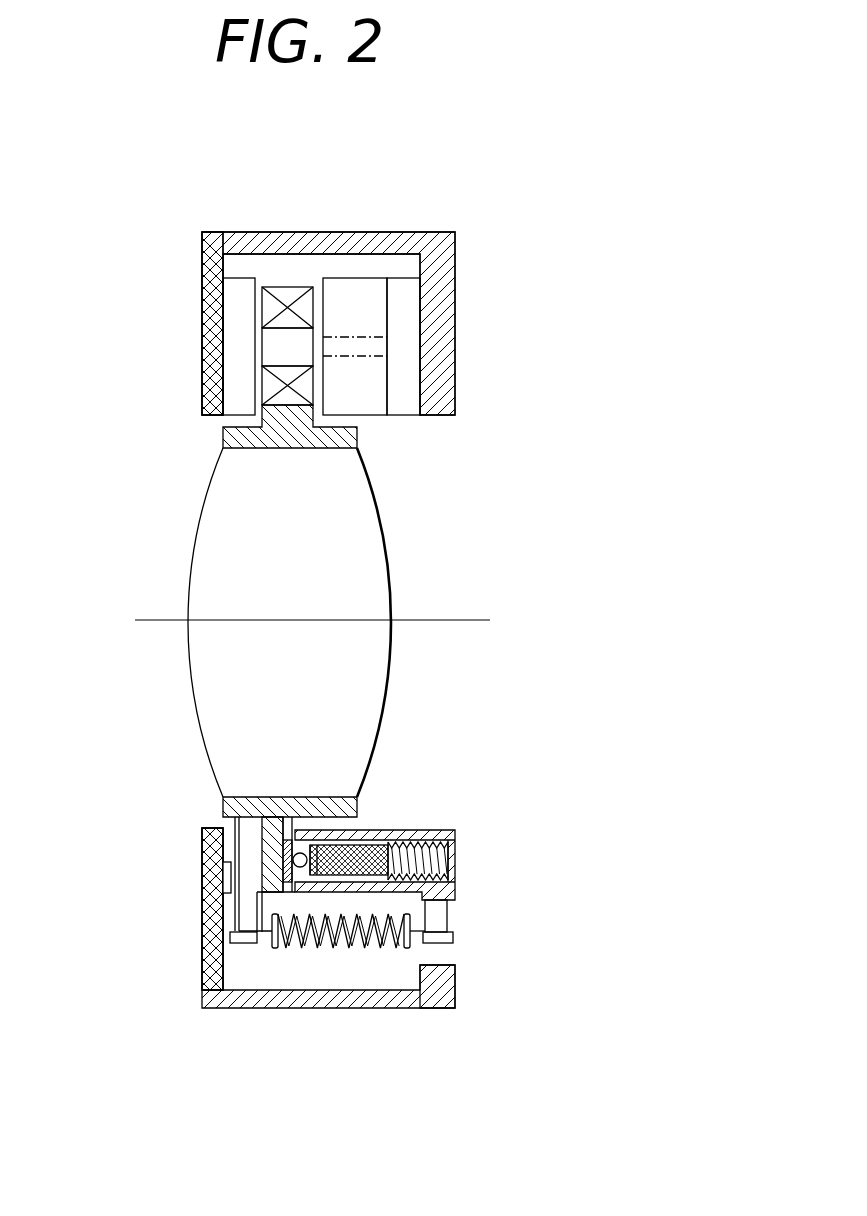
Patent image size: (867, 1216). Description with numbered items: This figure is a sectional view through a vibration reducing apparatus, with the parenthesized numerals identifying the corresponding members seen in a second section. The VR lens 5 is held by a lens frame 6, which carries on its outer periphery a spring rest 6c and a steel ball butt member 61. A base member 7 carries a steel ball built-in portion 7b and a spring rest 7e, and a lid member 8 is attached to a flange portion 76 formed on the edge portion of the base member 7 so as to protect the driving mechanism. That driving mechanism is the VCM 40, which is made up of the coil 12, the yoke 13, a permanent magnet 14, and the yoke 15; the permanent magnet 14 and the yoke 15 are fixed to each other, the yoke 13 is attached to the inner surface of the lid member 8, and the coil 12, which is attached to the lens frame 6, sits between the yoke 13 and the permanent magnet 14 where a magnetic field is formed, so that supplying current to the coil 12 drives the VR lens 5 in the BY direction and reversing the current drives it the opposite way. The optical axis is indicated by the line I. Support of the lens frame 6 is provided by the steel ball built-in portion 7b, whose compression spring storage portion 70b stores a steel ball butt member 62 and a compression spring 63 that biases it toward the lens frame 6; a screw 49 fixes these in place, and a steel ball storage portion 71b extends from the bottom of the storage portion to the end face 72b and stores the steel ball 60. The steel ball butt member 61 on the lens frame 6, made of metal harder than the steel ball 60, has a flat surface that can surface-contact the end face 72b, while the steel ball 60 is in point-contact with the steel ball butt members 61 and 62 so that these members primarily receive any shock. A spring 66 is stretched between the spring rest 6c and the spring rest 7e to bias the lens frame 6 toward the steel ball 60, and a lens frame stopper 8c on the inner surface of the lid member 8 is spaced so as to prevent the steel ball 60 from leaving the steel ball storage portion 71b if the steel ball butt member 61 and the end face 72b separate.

The VR lens 5 is at (197, 688).
The lens frame 6 is at (223, 436).
The base member 7 is at (450, 347).
The lid member 8 is at (207, 358).
The coil 12 is at (290, 287).
The yoke 13 is at (232, 295).
The permanent magnet 14 is at (370, 285).
The yoke 15 is at (412, 312).
The VCM 40 is at (311, 281).
The flange portion 76 is at (232, 232).
The optical axis I is at (157, 620).
The steel ball butt member 61 is at (283, 845).
The end face 72b is at (287, 836).
The steel ball storage portion 71b is at (323, 836).
The compression spring storage portion 70b is at (397, 832).
The adjusting screw 49 is at (447, 845).
The steel ball 60 is at (302, 868).
The steel ball butt member 62 is at (328, 896).
The compression spring 63 is at (366, 896).
The spring rest 6c is at (242, 907).
The lens frame stopper 8c is at (227, 868).
The steel ball built-in portion 7b is at (407, 903).
The spring rest 7e is at (443, 927).
The spring 66 is at (411, 966).